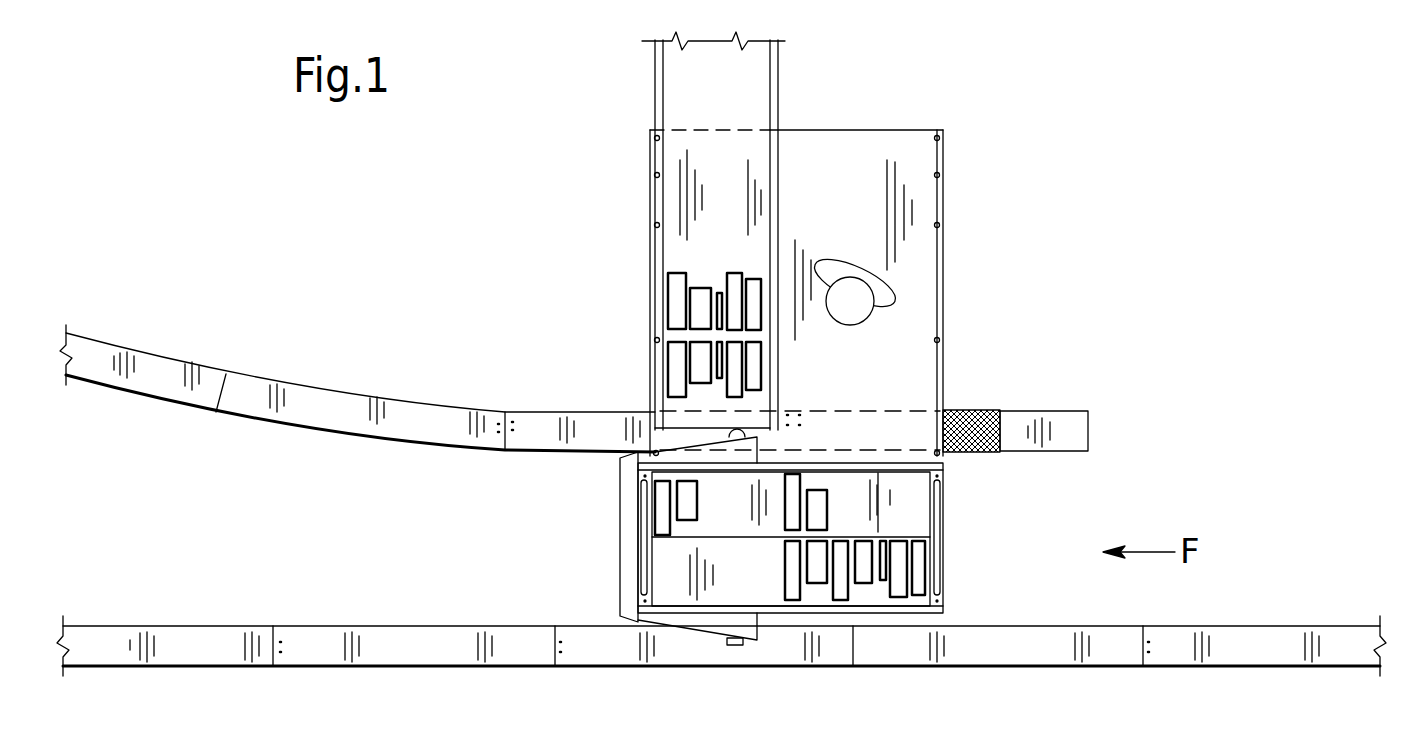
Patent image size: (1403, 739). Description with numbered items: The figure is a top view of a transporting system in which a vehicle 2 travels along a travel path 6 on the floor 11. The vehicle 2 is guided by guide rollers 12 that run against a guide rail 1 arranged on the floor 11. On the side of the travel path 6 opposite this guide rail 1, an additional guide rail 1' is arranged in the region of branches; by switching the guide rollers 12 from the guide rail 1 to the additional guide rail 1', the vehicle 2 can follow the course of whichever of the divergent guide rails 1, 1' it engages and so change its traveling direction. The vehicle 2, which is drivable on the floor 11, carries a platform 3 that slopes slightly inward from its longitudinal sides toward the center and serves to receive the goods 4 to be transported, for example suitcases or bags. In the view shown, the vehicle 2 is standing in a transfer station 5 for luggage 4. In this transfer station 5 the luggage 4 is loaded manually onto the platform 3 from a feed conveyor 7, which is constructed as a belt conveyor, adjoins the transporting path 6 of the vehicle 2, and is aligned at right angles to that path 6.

The guide rail 1 is at (1020, 408).
The additional guide rail 1' is at (721, 665).
The vehicle 2 is at (630, 490).
The platform 3 is at (700, 578).
The goods 4 is at (683, 290).
The transfer station 5 is at (878, 229).
The travel path 6 is at (993, 591).
The feed conveyor 7 is at (700, 214).
The floor 11 is at (1035, 547).
The guide rollers 12 is at (730, 432).